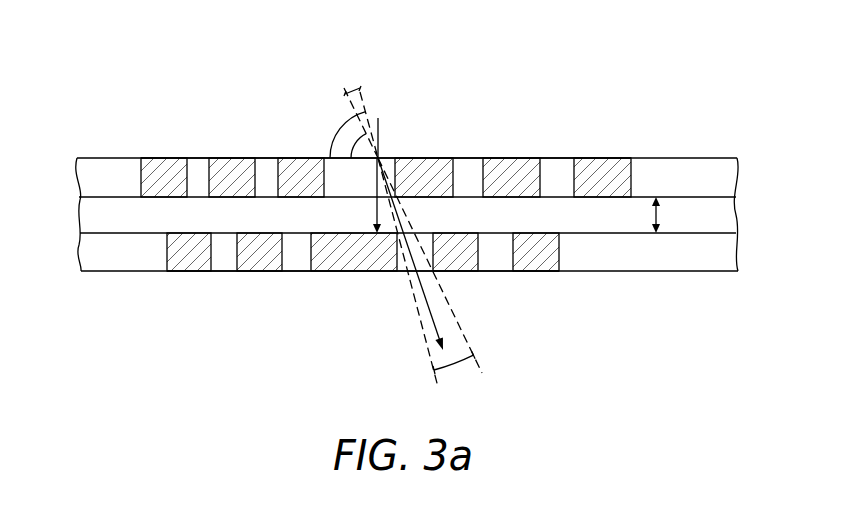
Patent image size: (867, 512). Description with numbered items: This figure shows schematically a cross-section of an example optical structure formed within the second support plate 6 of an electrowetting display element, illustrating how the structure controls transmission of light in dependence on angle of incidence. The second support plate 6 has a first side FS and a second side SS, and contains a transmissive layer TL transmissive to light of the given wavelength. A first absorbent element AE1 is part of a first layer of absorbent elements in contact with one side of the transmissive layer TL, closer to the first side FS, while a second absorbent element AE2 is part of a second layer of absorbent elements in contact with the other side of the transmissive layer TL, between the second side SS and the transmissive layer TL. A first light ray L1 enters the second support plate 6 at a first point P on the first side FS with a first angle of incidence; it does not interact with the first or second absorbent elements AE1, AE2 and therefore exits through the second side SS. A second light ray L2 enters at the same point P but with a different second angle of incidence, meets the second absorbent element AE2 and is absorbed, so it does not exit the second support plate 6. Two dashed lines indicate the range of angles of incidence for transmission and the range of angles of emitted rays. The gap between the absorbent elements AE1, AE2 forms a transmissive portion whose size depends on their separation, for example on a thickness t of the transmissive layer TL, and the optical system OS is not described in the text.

The second support plate 6 is at (745, 158).
The optical system / incident light OS is at (182, 126).
The transmissive layer TL is at (79, 216).
The first absorbent element AE1 is at (441, 158).
The second absorbent element AE2 is at (330, 272).
The first side FS is at (555, 158).
The second side SS is at (570, 272).
The first point P is at (380, 156).
The first light ray L1 is at (425, 303).
The second light ray L2 is at (373, 213).
The thickness of the transmissive layer t is at (661, 215).